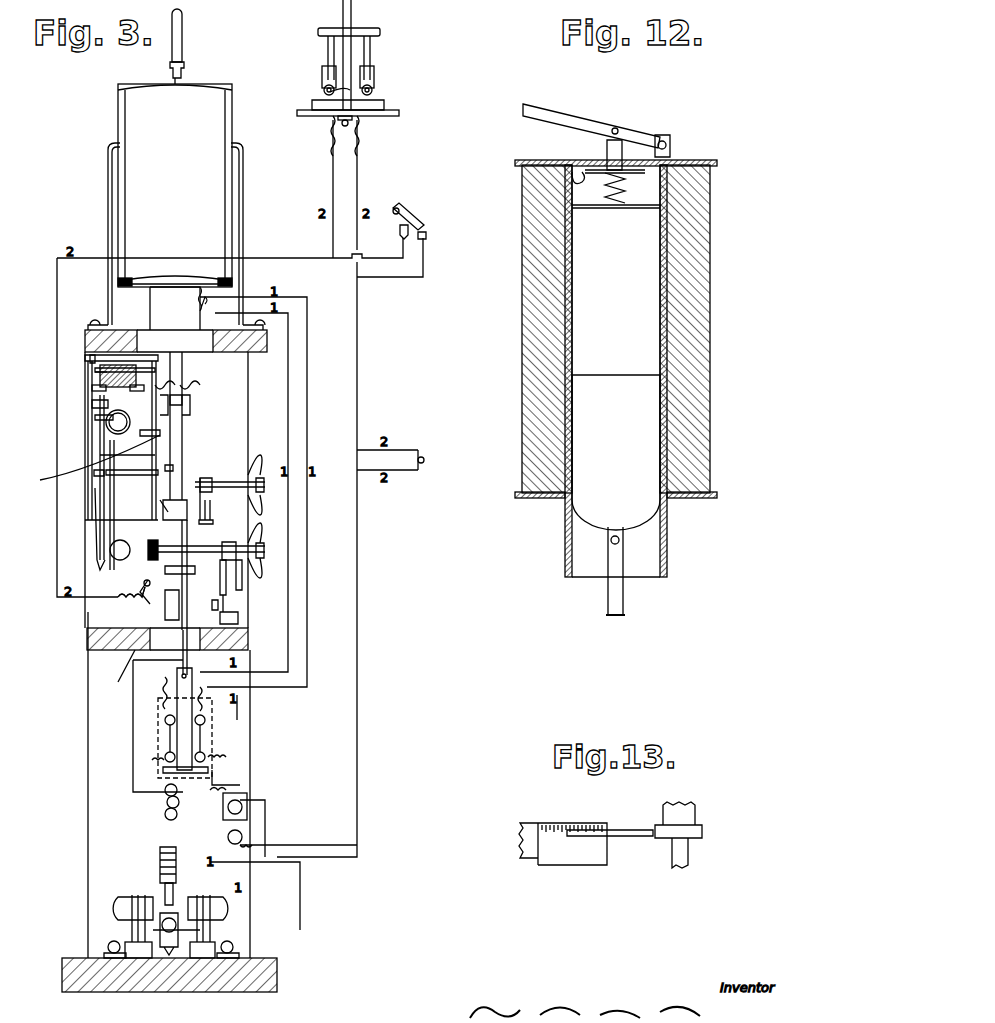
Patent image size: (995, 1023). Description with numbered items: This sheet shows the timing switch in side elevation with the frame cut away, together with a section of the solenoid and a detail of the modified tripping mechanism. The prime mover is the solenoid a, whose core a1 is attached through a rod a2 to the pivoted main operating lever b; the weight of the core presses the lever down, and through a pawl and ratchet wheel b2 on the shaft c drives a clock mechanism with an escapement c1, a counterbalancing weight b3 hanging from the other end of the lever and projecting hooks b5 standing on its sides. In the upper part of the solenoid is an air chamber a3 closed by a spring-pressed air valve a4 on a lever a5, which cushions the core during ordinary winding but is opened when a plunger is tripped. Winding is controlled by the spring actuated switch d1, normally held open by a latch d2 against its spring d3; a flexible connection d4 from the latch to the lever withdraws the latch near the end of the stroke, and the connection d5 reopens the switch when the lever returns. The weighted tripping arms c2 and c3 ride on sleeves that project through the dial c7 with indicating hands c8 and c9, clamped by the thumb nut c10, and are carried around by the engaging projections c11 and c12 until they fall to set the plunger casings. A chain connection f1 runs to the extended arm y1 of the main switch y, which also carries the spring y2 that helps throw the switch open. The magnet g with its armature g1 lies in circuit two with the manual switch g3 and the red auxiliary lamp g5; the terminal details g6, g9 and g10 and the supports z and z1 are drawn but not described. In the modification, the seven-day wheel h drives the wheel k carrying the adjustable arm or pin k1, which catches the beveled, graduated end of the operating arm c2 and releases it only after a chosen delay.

In FIG. 3, the solenoid a is at (142, 122).
In FIG. 12, the solenoid a is at (685, 302).
In FIG. 12, the core a1 is at (616, 452).
In FIG. 3, the rod a2 is at (183, 362).
In FIG. 12, the rod a2 is at (608, 598).
In FIG. 12, the air chamber a3 is at (640, 190).
In FIG. 12, the air valve a4 is at (575, 165).
In FIG. 3, the lever a5 is at (183, 31).
In FIG. 12, the lever a5 is at (568, 118).
In FIG. 3, the main operating lever b is at (190, 455).
In FIG. 3, the ratchet wheel b2 is at (170, 445).
In FIG. 3, the counterbalancing weight b3 is at (168, 510).
In FIG. 3, the projecting hooks b5 is at (62, 397).
In FIG. 3, the shaft c is at (89, 470).
In FIG. 3, the escapement c1 is at (92, 358).
In FIG. 3, the tripping arm c2 is at (244, 605).
In FIG. 3, the tripping arm c3 is at (168, 605).
In FIG. 13, the tripping arm c3 is at (530, 856).
In FIG. 3, the dial c7 is at (248, 585).
In FIG. 3, the indicating hand c8 is at (242, 575).
In FIG. 3, the indicating hand c9 is at (248, 530).
In FIG. 3, the thumb nut c10 is at (248, 535).
In FIG. 3, the engaging projection c11 is at (250, 605).
In FIG. 3, the engaging projection c12 is at (150, 566).
In FIG. 3, the spring actuated switch d1 is at (203, 736).
In FIG. 3, the latch d2 is at (165, 803).
In FIG. 3, the spring d3 is at (183, 733).
In FIG. 3, the flexible connection d4 is at (165, 472).
In FIG. 3, the connection d5 is at (186, 412).
In FIG. 3, the chain connection f1 is at (160, 830).
In FIG. 3, the magnet g is at (118, 602).
In FIG. 3, the armature g1 is at (150, 590).
In FIG. 3, the switch g3 is at (415, 217).
In FIG. 3, the auxiliary lamp g5 is at (425, 467).
In FIG. 3, the terminal post g6 is at (368, 48).
In FIG. 3, the spring lead g9 is at (360, 128).
In FIG. 3, the roller contact g10 is at (330, 90).
In FIG. 3, the wheel h is at (117, 677).
In FIG. 3, the wheel k is at (137, 433).
In FIG. 3, the arm or pin k1 is at (217, 509).
In FIG. 13, the arm or pin k1 is at (628, 833).
In FIG. 3, the main switch y is at (150, 905).
In FIG. 3, the extended arm y1 is at (175, 890).
In FIG. 3, the spring y2 is at (175, 873).
In FIG. 3, the terminal z is at (108, 944).
In FIG. 3, the terminal z1 is at (235, 947).